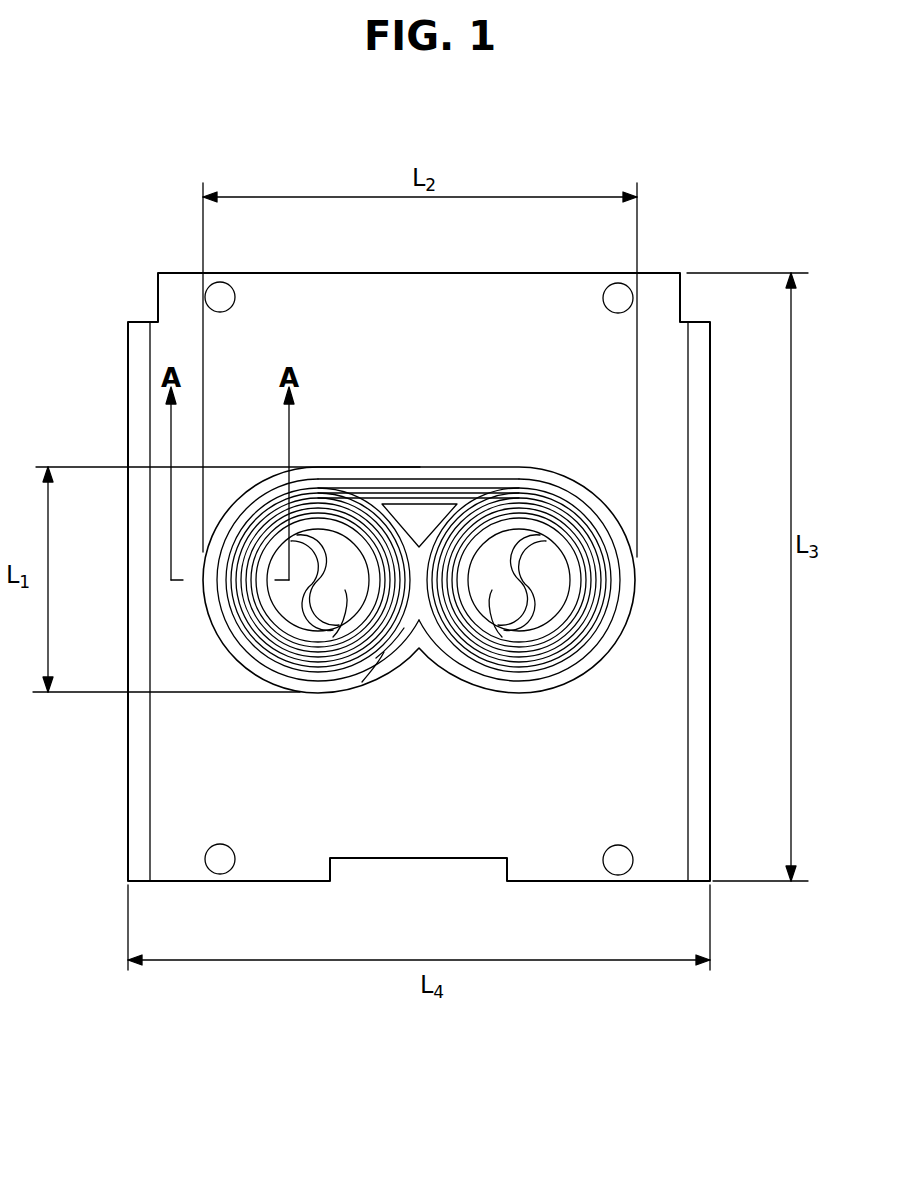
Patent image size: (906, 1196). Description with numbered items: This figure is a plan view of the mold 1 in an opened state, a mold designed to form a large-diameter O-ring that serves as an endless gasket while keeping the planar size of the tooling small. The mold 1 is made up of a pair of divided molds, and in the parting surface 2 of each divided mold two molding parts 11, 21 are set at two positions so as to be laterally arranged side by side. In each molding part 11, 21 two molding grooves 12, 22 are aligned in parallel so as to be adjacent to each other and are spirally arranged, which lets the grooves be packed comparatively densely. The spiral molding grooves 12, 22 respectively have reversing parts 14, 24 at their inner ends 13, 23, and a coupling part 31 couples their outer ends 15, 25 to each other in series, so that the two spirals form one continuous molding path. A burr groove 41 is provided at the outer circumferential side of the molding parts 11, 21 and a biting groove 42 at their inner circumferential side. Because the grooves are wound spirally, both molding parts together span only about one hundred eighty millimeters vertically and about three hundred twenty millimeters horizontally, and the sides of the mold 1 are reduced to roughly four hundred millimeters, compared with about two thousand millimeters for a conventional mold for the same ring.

The mold 1 is at (131, 321).
The parting surface 2 is at (608, 370).
The molding part 11 is at (237, 657).
The molding groove 12 is at (250, 547).
The inner end 13 is at (361, 527).
The reversing part 14 is at (333, 637).
The outer end 15 is at (316, 490).
The molding part 21 is at (608, 647).
The molding groove 22 is at (580, 530).
The inner end 23 is at (473, 525).
The reversing part 24 is at (502, 637).
The outer end 25 is at (522, 492).
The coupling part 31 is at (412, 487).
The burr groove 41 is at (362, 682).
The biting groove 42 is at (376, 658).